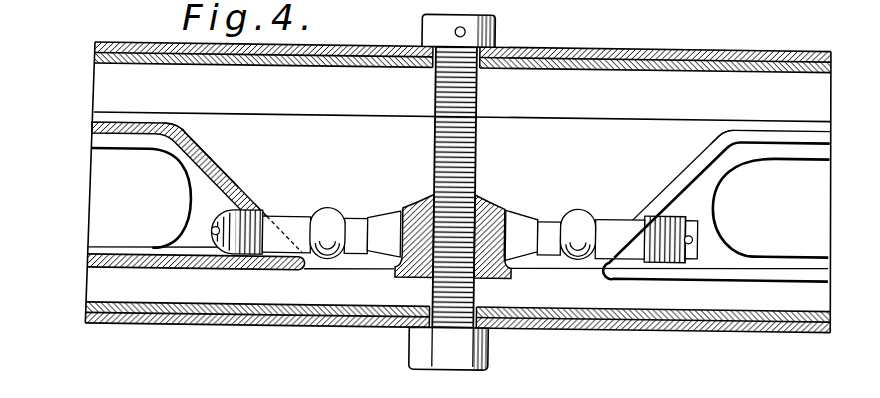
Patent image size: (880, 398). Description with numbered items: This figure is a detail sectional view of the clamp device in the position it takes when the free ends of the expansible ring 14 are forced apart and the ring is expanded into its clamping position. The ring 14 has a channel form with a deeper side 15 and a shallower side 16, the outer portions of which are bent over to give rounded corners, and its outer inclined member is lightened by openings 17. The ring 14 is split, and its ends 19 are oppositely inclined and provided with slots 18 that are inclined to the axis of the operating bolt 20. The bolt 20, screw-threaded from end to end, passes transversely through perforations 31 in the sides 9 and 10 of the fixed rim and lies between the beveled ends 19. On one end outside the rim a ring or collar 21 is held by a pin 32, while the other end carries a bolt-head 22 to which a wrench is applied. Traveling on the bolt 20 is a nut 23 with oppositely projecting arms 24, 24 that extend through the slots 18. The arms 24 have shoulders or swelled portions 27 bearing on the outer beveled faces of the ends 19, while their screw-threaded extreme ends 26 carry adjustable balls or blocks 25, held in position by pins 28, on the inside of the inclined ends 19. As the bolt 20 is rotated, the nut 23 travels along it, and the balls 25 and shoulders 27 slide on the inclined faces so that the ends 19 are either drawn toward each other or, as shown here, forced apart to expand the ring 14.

The side of the fixed rim 9 is at (363, 68).
The side of the fixed rim 10 is at (352, 306).
The expansible ring 14 is at (658, 196).
The side of the ring 15 is at (140, 131).
The side of the ring 16 is at (147, 258).
The openings 17 is at (112, 247).
The slots 18 is at (250, 192).
The ends of the ring 19 is at (200, 142).
The operating bolt 20 is at (479, 138).
The ring or collar 21 is at (497, 38).
The bolt-head 22 is at (490, 355).
The nut 23 is at (500, 210).
The arms 24 is at (296, 220).
The balls or blocks 25 is at (240, 216).
The extreme ends of the arms 26 is at (216, 234).
The shoulders or swelled portions 27 is at (338, 211).
The pins 28 is at (213, 256).
The perforations 31 is at (433, 70).
The pin 32 is at (466, 28).